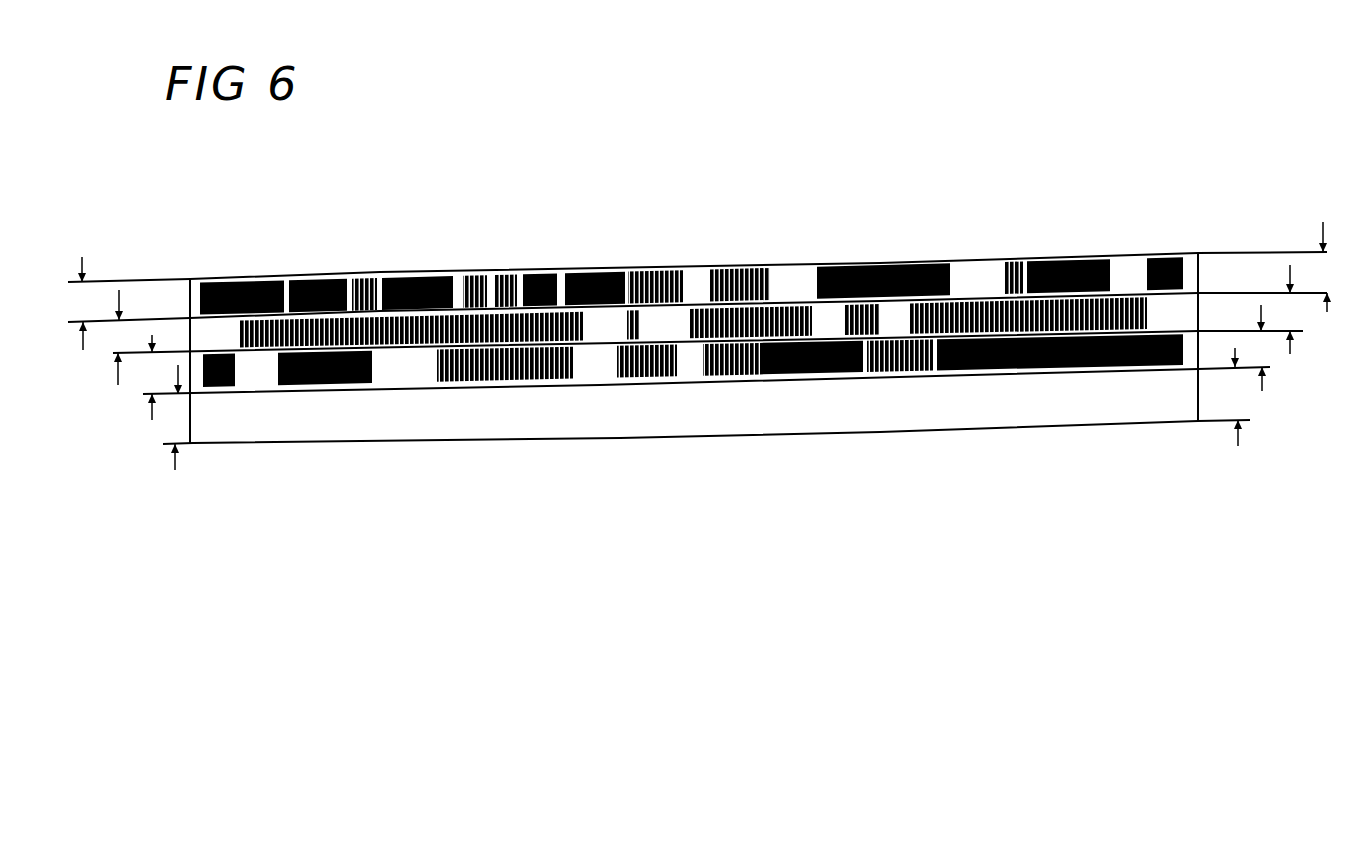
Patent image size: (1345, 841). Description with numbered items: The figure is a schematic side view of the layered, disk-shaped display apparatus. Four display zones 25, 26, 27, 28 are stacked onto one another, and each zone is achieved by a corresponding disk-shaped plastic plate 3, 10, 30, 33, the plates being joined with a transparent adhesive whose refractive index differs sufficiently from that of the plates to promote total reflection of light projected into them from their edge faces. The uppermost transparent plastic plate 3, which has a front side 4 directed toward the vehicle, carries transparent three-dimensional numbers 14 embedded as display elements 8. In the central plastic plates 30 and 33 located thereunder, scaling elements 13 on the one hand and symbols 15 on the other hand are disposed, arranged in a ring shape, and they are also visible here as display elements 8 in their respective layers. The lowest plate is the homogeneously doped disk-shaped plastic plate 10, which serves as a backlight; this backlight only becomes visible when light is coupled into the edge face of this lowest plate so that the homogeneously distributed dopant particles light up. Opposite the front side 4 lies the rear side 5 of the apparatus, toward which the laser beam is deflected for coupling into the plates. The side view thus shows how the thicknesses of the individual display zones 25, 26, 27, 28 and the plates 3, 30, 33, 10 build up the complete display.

The transparent plastic plate 3 is at (1327, 267).
The front side 4 is at (677, 262).
The rear side 5 is at (673, 441).
The display elements 8 is at (408, 283).
The lower homogeneously doped disk-shaped plastic plate 10 is at (1233, 397).
The scaling elements 13 is at (243, 331).
The three-dimensional numbers 14 is at (567, 283).
The symbols 15 is at (381, 362).
The display zone 25 is at (84, 303).
The display zone 26 is at (123, 337).
The display zone 27 is at (152, 377).
The display zone 28 is at (178, 417).
The central plastic plate 30 is at (1293, 309).
The central plastic plate 33 is at (1262, 348).